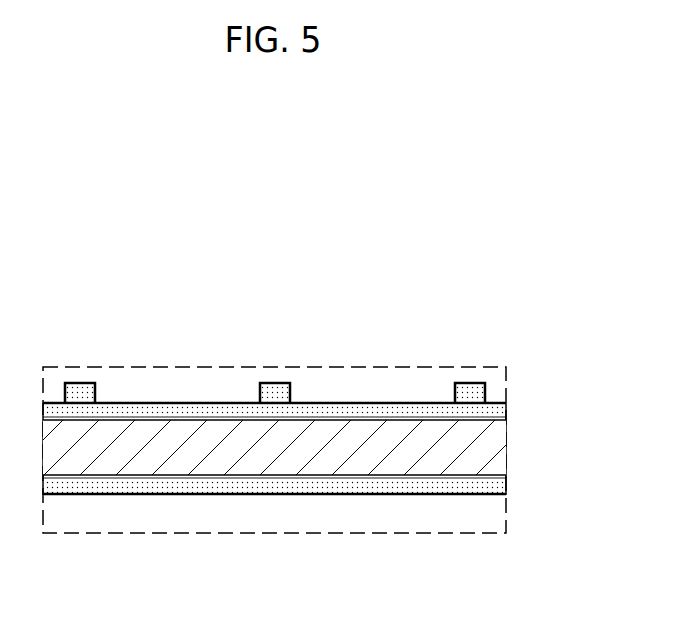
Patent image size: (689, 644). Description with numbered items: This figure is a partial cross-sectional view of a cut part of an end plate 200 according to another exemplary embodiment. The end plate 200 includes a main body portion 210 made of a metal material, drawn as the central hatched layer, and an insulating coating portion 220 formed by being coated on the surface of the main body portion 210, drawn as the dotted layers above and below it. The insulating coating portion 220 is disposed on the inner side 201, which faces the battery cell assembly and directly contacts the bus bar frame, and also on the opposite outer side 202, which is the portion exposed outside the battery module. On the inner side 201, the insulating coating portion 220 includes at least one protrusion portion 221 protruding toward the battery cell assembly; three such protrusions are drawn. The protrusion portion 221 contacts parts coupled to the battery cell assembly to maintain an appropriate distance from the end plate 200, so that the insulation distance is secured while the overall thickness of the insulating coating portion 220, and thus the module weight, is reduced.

The end plate 200 is at (266, 259).
The inner side 201 is at (323, 402).
The outer side 202 is at (322, 497).
The main body portion 210 is at (494, 448).
The insulating coating portion 220 is at (187, 415).
The protrusion portion 221 is at (78, 389).